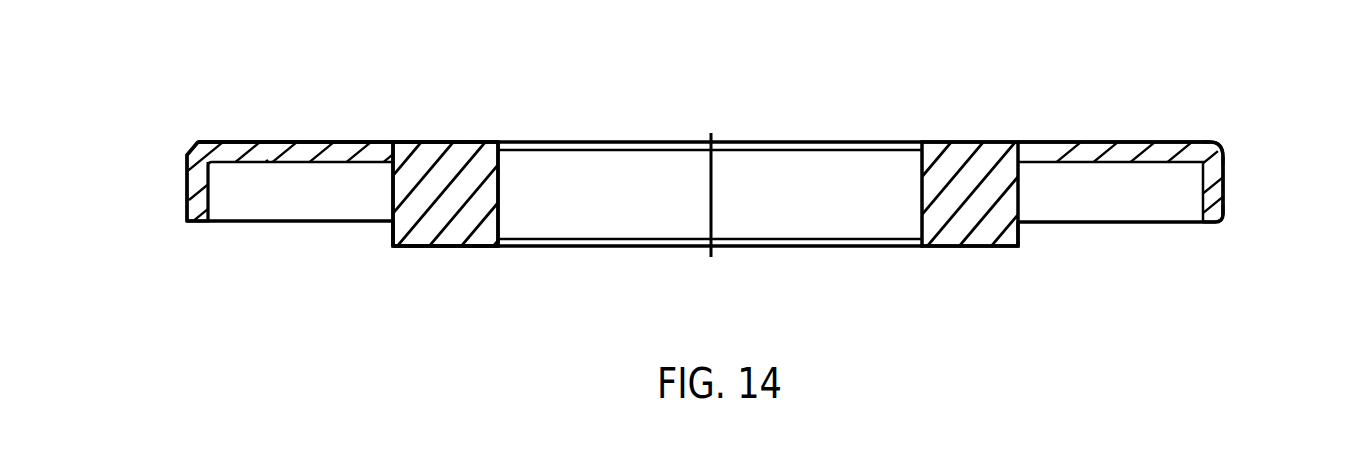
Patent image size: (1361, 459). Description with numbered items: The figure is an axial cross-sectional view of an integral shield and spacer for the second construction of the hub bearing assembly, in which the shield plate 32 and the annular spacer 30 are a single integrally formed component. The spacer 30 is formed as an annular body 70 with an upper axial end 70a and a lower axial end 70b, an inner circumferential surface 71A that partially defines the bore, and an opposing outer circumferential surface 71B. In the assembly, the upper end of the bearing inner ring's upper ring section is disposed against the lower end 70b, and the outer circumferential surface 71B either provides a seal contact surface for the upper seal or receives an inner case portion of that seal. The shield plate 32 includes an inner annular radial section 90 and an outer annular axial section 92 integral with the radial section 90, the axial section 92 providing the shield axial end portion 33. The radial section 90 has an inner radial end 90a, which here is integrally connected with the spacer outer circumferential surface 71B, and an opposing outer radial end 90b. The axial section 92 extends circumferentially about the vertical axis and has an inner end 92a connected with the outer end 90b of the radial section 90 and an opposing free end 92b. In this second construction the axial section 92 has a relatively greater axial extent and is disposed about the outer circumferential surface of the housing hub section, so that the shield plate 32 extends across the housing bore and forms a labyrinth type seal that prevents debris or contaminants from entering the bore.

The annular spacer 30 is at (457, 103).
The shield plate 32 is at (295, 106).
The axial end portion 33 is at (1245, 192).
The annular body 70 is at (450, 258).
The upper axial end 70a is at (472, 141).
The lower axial end 70b is at (422, 248).
The inner circumferential surface 71A is at (500, 193).
The outer circumferential surface 71B is at (392, 208).
The inner annular radial section 90 is at (325, 128).
The inner radial end 90a is at (1034, 141).
The outer radial end 90b is at (1205, 141).
The outer annular axial section 92 is at (173, 185).
The inner end 92a is at (1218, 148).
The free end 92b is at (1215, 223).